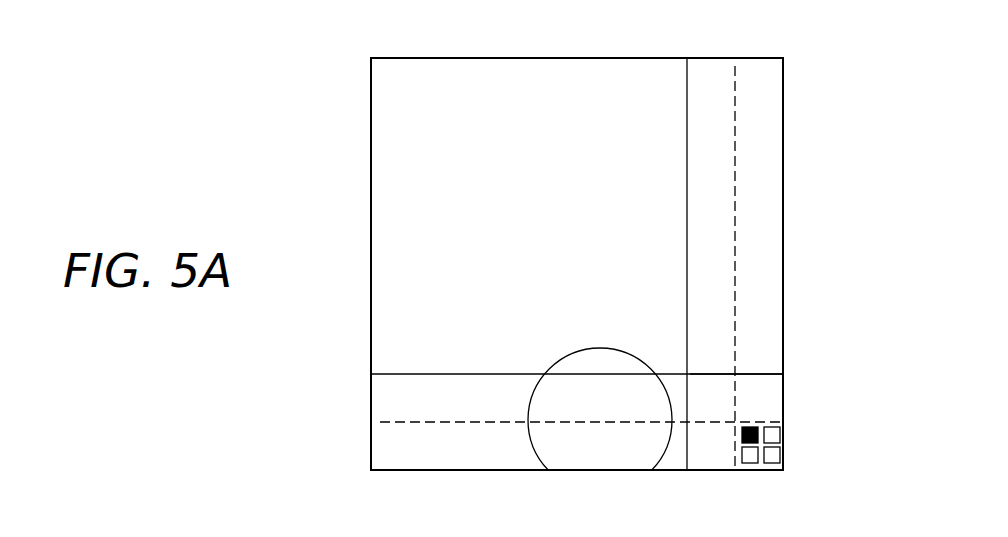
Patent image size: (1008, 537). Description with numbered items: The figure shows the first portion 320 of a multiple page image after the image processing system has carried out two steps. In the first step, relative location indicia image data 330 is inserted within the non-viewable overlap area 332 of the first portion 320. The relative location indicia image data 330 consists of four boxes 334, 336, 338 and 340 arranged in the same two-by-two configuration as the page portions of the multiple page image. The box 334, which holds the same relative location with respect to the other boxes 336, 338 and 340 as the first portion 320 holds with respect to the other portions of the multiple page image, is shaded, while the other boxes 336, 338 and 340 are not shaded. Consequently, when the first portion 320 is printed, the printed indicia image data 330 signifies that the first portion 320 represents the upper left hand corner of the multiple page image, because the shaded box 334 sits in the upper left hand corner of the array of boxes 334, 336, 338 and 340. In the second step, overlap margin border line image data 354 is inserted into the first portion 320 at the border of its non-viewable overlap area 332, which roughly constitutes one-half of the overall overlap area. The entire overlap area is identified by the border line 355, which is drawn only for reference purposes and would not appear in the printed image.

The first portion 320 is at (350, 149).
The relative location indicia image data 330 is at (799, 457).
The non-viewable overlap area 332 is at (759, 366).
The box 334 is at (748, 421).
The box 336 is at (773, 435).
The box 338 is at (752, 455).
The box 340 is at (773, 456).
The overlap margin border line image data 354 is at (738, 78).
The border line 355 is at (687, 80).